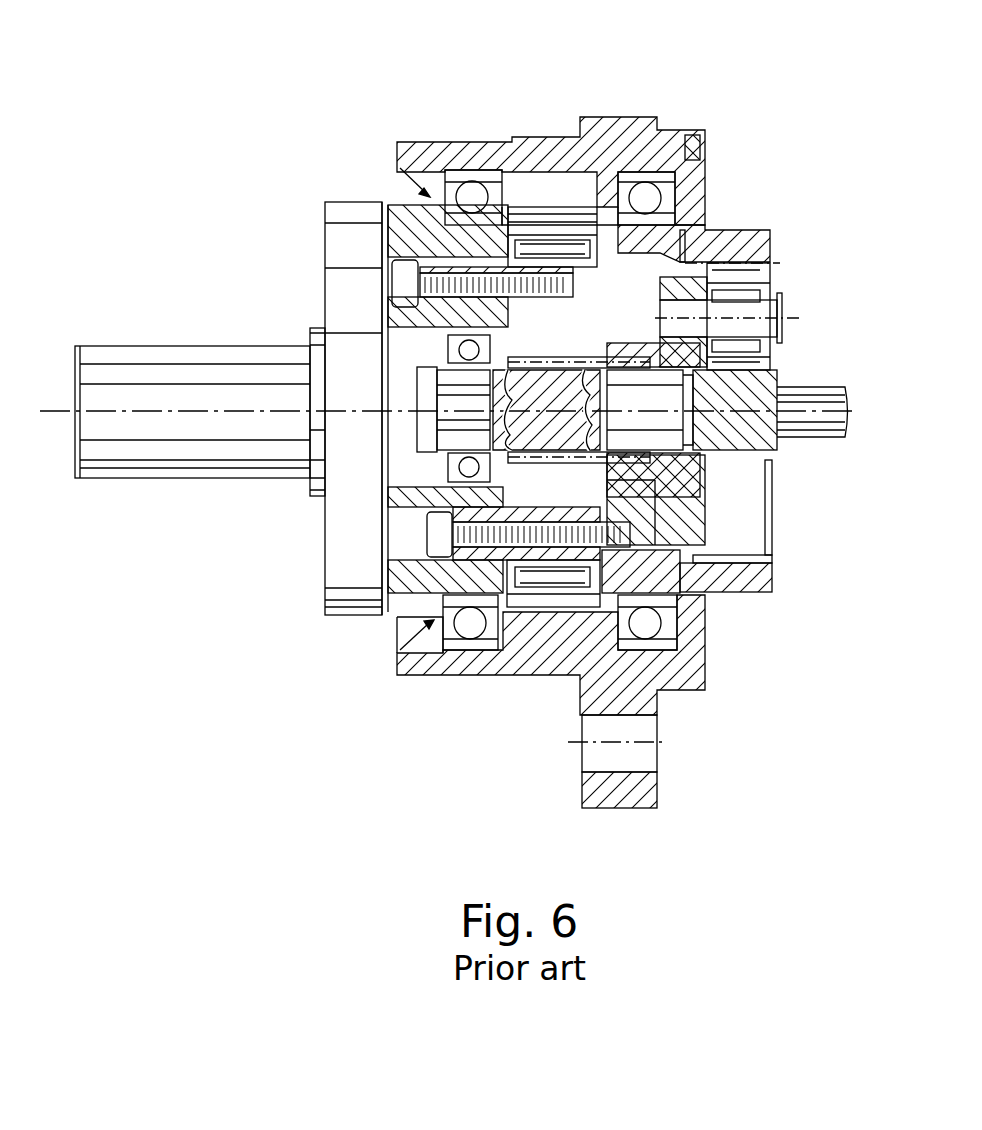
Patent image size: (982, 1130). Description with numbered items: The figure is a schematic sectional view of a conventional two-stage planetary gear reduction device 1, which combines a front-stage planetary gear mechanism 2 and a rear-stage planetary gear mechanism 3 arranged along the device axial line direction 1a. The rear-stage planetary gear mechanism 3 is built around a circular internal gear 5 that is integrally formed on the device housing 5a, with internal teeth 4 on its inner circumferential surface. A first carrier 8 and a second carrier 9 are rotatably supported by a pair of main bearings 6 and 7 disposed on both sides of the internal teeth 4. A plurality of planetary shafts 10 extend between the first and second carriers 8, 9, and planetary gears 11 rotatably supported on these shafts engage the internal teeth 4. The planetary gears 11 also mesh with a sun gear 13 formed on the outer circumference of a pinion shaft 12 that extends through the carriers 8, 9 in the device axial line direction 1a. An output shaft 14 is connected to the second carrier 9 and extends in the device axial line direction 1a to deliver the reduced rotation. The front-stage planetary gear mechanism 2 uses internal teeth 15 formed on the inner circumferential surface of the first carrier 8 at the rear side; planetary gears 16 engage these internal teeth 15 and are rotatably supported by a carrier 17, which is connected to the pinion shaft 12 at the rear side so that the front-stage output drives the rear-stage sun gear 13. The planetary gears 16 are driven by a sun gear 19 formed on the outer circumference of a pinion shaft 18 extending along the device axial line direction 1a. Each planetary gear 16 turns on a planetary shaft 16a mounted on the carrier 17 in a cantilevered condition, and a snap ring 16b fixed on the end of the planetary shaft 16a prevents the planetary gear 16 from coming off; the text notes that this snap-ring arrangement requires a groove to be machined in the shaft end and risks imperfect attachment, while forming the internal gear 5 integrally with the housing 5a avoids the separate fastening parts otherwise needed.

The two-stage planetary gear reduction device 1 is at (376, 110).
The device axial line direction 1a is at (160, 412).
The front-stage planetary gear mechanism 2 is at (834, 287).
The rear-stage planetary gear mechanism 3 is at (397, 697).
The internal teeth 4 is at (537, 595).
The internal gear 5 is at (545, 677).
The device housing 5a is at (582, 715).
The main bearing 6 is at (670, 622).
The main bearing 7 is at (437, 675).
The first carrier 8 is at (630, 580).
The second carrier 9 is at (397, 620).
The planetary shaft 10 is at (415, 252).
The planetary gear 11 is at (553, 223).
The pinion shaft 12 is at (562, 440).
The sun gear 13 is at (410, 490).
The output shaft 14 is at (222, 450).
The internal teeth 15 is at (737, 548).
The planetary gear 16 is at (750, 363).
The planetary shaft 16a is at (750, 312).
The snap ring 16b is at (781, 292).
The carrier 17 is at (690, 508).
The pinion shaft 18 is at (770, 428).
The sun gear 19 is at (768, 470).